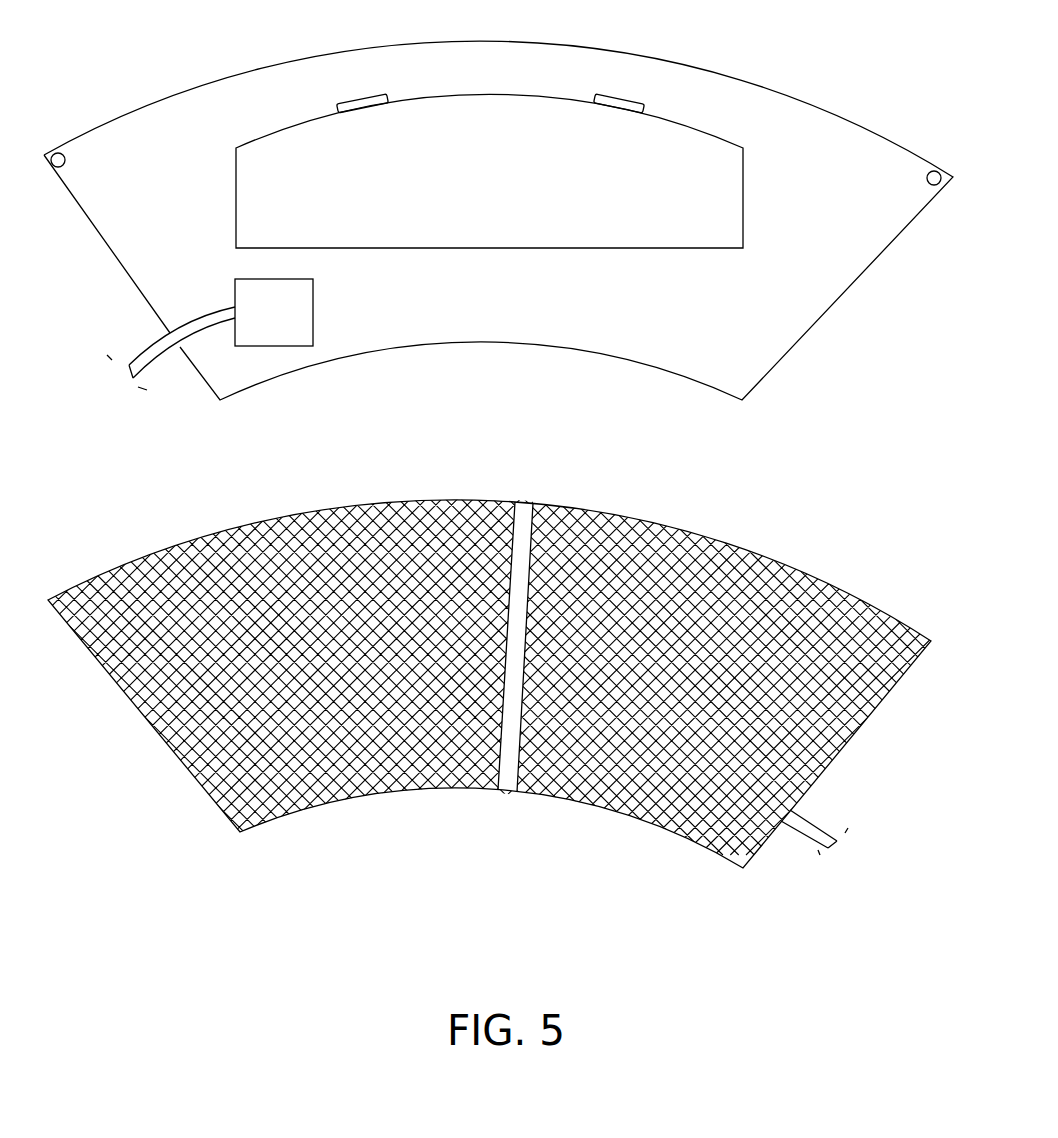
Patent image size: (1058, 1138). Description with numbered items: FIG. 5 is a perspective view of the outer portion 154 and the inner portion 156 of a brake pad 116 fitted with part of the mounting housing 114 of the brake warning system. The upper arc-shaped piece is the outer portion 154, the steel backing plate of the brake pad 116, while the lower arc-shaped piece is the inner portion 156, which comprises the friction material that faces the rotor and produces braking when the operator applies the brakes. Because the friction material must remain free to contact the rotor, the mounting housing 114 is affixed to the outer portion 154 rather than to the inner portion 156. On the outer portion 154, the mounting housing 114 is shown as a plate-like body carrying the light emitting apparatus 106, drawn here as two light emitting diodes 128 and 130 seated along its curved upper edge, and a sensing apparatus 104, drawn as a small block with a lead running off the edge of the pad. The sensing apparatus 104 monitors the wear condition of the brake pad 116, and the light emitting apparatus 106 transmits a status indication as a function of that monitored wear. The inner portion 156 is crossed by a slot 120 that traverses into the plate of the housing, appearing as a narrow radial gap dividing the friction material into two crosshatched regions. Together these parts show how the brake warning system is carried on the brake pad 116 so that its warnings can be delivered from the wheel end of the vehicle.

The sensing apparatus 104 is at (313, 312).
The light emitting apparatus 106 is at (486, 67).
The mounting housing 114 is at (743, 196).
The brake pad 116 is at (742, 401).
The slot 120 is at (505, 772).
The light emitting diode 128 is at (337, 98).
The light emitting diode 130 is at (636, 97).
The outer portion 154 is at (878, 173).
The inner portion 156 is at (568, 533).